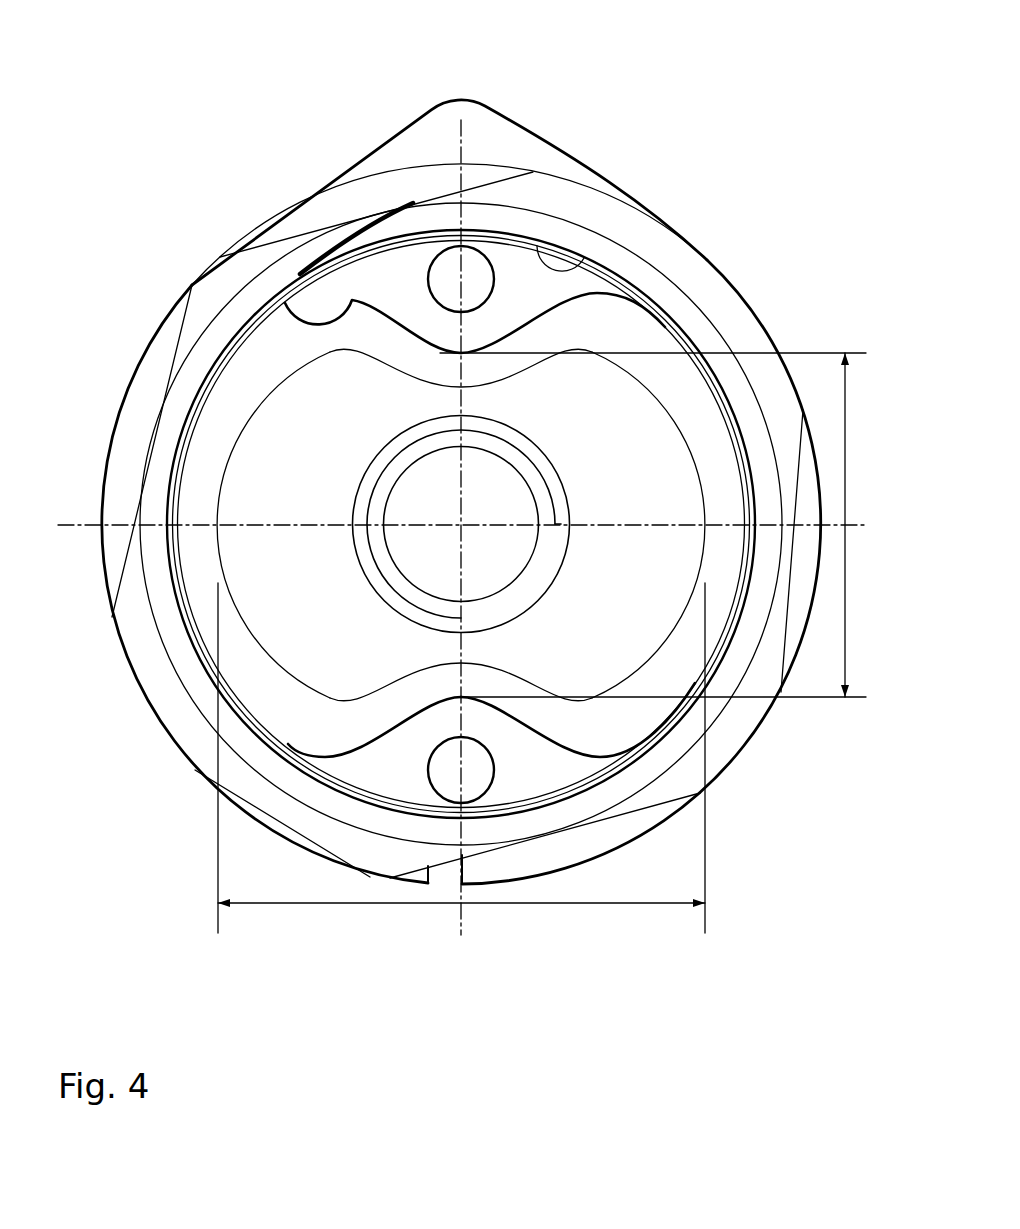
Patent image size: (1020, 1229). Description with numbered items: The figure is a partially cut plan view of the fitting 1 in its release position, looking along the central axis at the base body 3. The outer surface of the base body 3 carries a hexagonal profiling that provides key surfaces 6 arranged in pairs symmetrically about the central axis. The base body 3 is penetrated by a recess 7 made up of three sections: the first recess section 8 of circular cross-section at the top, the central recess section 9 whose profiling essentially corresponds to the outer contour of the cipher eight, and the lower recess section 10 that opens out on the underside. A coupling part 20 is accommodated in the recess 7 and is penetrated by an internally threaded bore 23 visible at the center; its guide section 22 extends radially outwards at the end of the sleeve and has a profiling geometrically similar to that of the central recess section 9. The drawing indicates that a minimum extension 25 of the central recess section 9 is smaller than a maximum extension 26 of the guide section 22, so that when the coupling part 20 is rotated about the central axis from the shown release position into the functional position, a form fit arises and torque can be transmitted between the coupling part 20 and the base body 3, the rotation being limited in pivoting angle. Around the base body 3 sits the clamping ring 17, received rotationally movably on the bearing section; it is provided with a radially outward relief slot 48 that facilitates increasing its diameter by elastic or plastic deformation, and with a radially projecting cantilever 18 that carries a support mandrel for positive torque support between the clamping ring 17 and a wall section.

The fitting 1 is at (252, 100).
The base body 3 is at (143, 613).
The key surfaces 6 is at (180, 333).
The recess 7 is at (430, 372).
The first recess section 8 is at (538, 244).
The central recess section 9 is at (278, 302).
The lower recess section 10 is at (410, 688).
The clamping ring 17 is at (593, 845).
The cantilever 18 is at (478, 137).
The coupling part 20 is at (265, 462).
The guide section 22 is at (662, 474).
The internally threaded bore 23 is at (553, 481).
The minimum extension 25 is at (845, 525).
The maximum extension 26 is at (533, 907).
The relief slot 48 is at (446, 885).